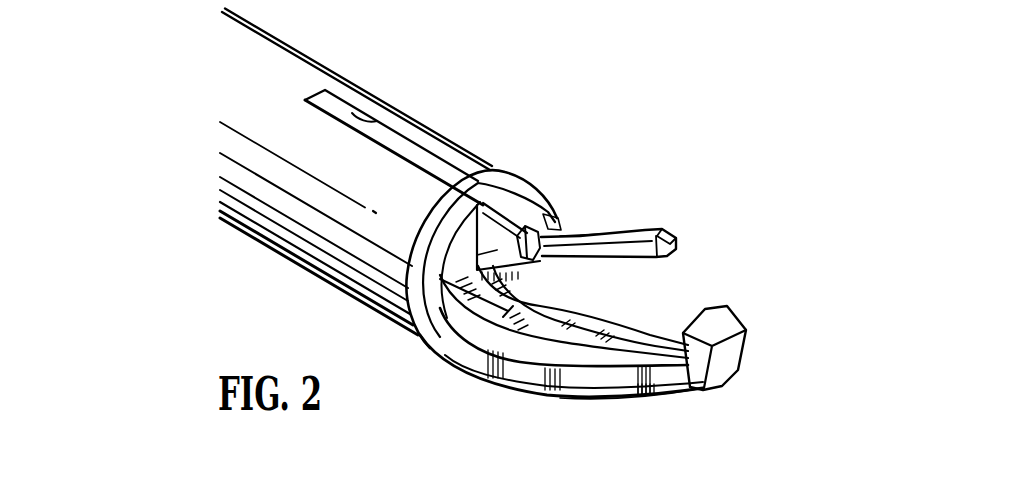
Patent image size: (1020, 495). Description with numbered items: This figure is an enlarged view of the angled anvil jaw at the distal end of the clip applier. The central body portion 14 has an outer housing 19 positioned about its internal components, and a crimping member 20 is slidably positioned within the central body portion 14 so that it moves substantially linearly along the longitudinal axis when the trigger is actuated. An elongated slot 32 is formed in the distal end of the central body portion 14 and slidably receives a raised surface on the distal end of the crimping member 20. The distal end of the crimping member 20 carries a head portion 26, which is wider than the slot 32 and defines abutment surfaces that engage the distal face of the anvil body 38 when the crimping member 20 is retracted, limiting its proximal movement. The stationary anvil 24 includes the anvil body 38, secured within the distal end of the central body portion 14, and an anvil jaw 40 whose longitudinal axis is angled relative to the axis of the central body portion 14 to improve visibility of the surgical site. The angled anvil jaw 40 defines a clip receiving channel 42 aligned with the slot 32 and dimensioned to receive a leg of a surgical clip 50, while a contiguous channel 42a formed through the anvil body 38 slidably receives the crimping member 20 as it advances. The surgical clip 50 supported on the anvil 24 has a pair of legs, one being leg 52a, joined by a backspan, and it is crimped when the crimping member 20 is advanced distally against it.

The central body portion 14 is at (290, 44).
The outer housing 19 is at (285, 72).
The elongated slot 32 is at (377, 120).
The crimping member 20 is at (485, 178).
The leg 52a is at (598, 235).
The surgical clip 50 is at (650, 226).
The clip receiving channel 42 is at (618, 352).
The channel 42a is at (480, 362).
The anvil jaw 40 is at (585, 388).
The anvil 24 is at (638, 403).
The head portion 26 is at (404, 335).
The anvil body 38 is at (412, 283).